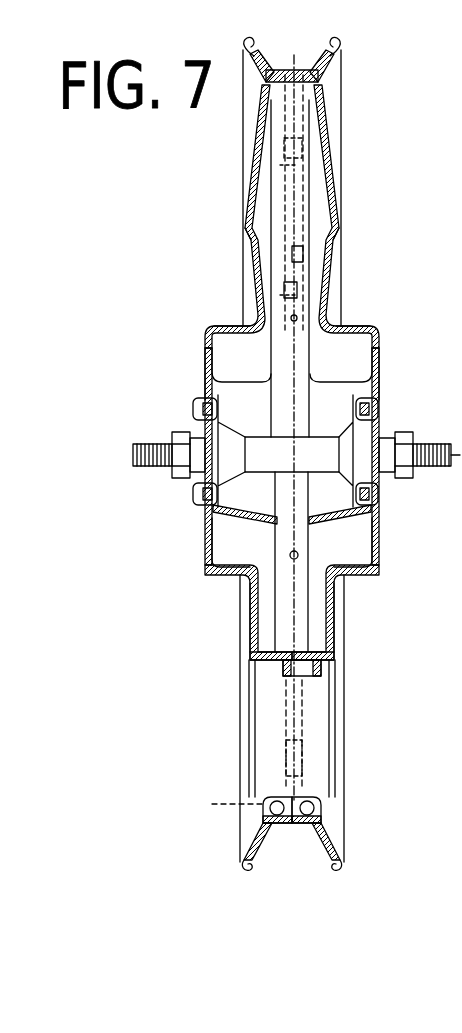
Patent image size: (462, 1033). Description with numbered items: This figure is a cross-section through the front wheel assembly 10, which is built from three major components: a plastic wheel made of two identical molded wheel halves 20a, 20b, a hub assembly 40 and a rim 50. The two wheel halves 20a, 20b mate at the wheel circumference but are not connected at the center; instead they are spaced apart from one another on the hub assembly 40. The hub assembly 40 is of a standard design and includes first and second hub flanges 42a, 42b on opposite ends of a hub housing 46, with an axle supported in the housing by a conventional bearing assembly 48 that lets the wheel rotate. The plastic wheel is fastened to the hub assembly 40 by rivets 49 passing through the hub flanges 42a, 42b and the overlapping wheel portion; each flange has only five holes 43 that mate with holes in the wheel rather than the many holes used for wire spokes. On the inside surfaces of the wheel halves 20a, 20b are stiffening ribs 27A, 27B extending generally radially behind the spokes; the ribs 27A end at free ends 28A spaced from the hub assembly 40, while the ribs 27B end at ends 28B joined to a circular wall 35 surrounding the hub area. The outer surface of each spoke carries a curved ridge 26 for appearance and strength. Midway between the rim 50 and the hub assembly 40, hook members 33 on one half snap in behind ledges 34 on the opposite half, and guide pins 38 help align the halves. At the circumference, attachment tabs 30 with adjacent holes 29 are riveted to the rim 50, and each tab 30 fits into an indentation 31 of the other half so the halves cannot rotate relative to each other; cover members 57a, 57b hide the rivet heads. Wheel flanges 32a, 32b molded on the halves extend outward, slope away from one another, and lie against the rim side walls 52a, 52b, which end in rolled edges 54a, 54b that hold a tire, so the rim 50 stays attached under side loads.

The front wheel assembly 10 is at (355, 122).
The wheel half 20a is at (207, 570).
The wheel half 20b is at (380, 572).
The curved ridge 26 is at (246, 233).
The stiffening rib 27A is at (222, 325).
The stiffening rib 27B is at (240, 580).
The free end 28A is at (246, 368).
The end 28B is at (254, 520).
The hole 29 is at (345, 152).
The attachment tab 30 is at (283, 152).
The indentation 31 is at (262, 182).
The wheel flange 32a is at (258, 86).
The wheel flange 32b is at (348, 84).
The hook member 33 is at (292, 262).
The ledge 34 is at (286, 676).
The circular wall 35 is at (205, 370).
The guide pin 38 is at (220, 801).
The hub assembly 40 is at (385, 432).
The hub flange 42a is at (196, 478).
The hub flange 42b is at (392, 478).
The hole 43 is at (212, 392).
The hub housing 46 is at (379, 365).
The bearing assembly 48 is at (232, 452).
The rivet 49 is at (203, 402).
The rim 50 is at (296, 70).
The side wall 52a is at (250, 48).
The side wall 52b is at (338, 50).
The rolled edge 54a is at (246, 868).
The rolled edge 54b is at (338, 868).
The cover member 57a is at (272, 808).
The cover member 57b is at (322, 806).